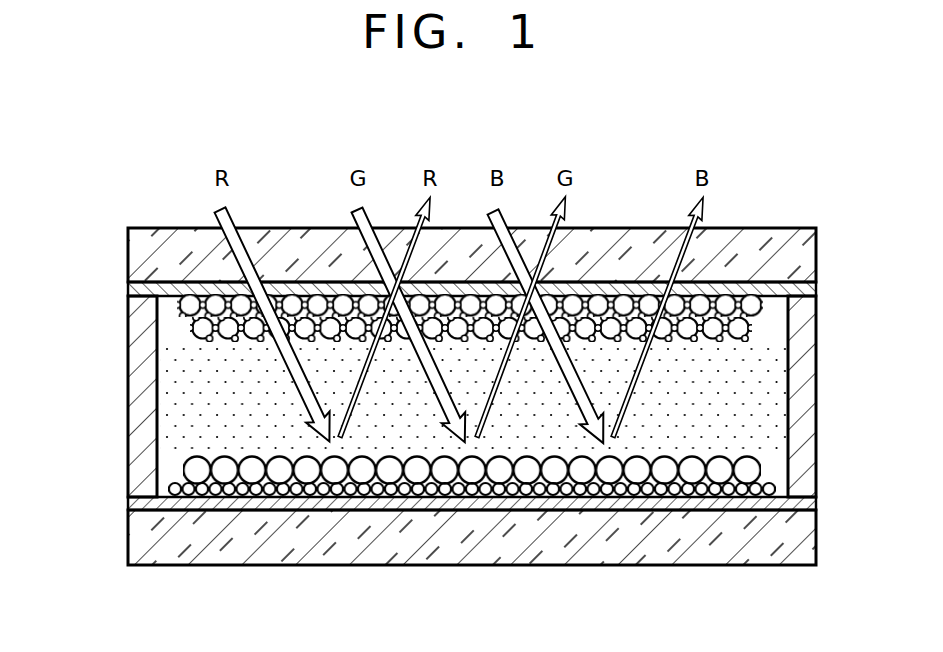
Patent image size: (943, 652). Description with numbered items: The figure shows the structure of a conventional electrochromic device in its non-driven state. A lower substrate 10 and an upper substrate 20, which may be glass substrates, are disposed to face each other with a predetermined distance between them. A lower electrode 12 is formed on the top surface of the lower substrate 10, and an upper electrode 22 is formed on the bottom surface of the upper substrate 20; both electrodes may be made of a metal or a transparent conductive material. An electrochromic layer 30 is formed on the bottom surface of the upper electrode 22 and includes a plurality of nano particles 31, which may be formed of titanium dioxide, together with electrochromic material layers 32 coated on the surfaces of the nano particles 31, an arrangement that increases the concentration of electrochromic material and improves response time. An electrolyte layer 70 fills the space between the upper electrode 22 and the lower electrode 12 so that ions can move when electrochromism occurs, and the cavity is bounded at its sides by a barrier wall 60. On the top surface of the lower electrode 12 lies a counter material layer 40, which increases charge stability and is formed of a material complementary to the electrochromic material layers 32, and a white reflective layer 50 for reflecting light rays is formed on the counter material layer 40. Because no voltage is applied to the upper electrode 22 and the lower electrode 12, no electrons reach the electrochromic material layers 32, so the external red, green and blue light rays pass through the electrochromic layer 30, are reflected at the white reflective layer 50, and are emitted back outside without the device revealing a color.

The lower substrate 10 is at (136, 543).
The lower electrode 12 is at (136, 505).
The upper substrate 20 is at (130, 248).
The upper electrode 22 is at (130, 292).
The electrochromic layer 30 is at (399, 338).
The nano particles 31 is at (194, 323).
The electrochromic material layers 32 is at (205, 337).
The counter material layer 40 is at (172, 490).
The white reflective layer 50 is at (187, 470).
The barrier wall 60 is at (142, 413).
The electrolyte layer 70 is at (770, 398).